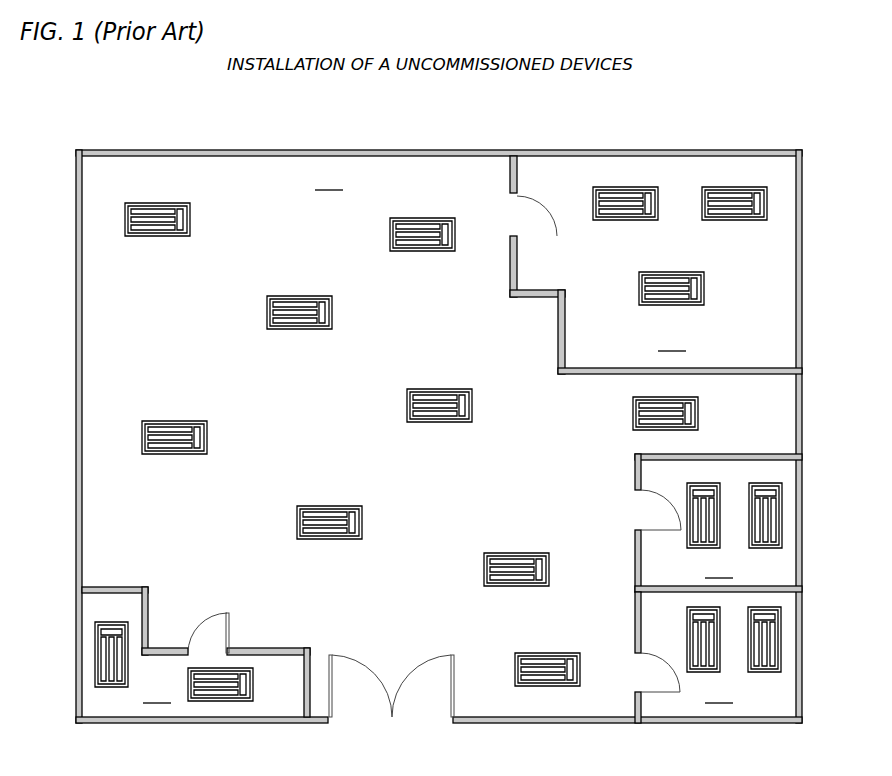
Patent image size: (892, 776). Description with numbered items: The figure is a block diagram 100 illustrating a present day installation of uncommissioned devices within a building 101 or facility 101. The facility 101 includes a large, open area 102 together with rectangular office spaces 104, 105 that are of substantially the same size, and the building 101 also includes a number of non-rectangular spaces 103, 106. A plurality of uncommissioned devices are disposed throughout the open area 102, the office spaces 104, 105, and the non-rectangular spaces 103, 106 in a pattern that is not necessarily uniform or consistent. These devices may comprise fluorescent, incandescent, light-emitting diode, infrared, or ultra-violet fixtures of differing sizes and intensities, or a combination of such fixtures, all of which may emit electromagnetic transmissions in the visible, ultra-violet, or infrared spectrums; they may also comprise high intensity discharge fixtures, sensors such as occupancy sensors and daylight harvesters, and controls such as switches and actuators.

The block diagram 100 is at (752, 98).
The building or facility 101 is at (407, 151).
The open area 102 is at (393, 297).
The non-rectangular space 103 is at (656, 265).
The rectangular office space 104 is at (718, 523).
The rectangular office space 105 is at (708, 657).
The non-rectangular space 106 is at (196, 652).